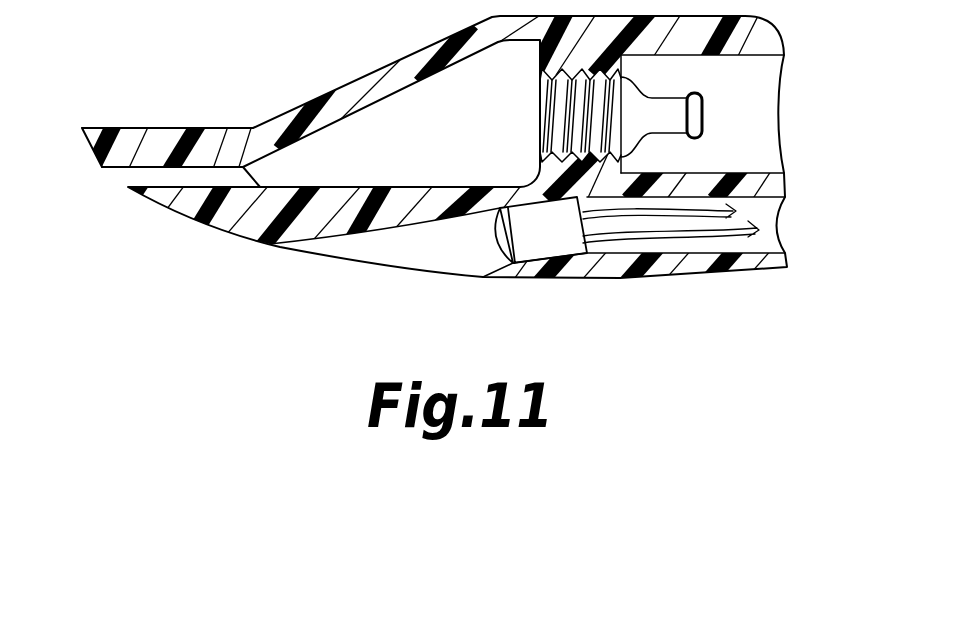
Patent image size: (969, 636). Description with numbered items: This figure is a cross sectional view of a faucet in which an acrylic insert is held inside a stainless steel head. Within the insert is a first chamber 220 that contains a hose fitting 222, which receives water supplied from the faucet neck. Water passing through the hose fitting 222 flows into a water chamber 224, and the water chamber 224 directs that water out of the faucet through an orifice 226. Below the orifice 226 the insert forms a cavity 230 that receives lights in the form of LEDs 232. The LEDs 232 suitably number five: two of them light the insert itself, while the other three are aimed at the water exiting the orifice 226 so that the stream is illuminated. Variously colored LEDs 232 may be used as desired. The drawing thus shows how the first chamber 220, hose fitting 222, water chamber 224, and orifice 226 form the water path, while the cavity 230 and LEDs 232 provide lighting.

The first chamber 220 is at (743, 140).
The hose fitting 222 is at (695, 112).
The water chamber 224 is at (395, 132).
The orifice 226 is at (138, 173).
The cavity 230 is at (437, 250).
The LEDs 232 is at (525, 238).